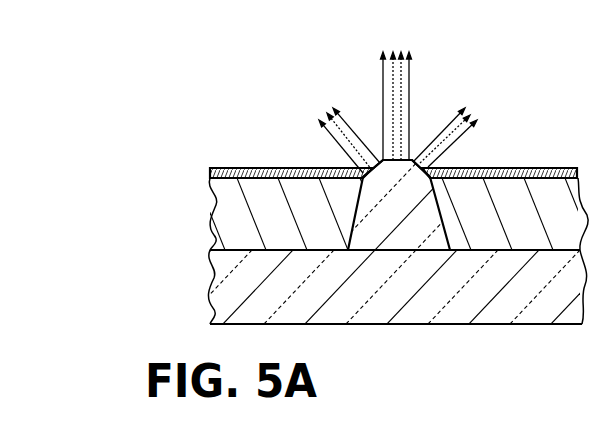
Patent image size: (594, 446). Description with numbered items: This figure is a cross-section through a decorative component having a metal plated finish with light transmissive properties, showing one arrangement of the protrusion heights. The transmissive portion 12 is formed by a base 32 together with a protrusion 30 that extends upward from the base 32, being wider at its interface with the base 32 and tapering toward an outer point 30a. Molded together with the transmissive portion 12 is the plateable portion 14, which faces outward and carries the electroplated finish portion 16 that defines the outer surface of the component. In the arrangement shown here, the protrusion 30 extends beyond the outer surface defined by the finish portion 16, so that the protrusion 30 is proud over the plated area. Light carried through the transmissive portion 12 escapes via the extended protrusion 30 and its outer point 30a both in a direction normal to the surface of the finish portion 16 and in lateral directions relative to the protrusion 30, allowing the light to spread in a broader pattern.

The transmissive portion 12 is at (220, 285).
The plateable portion 14 is at (220, 217).
The finish portion 16 is at (252, 168).
The protrusion 30 is at (410, 206).
The outer point 30a is at (398, 161).
The base 32 is at (386, 268).